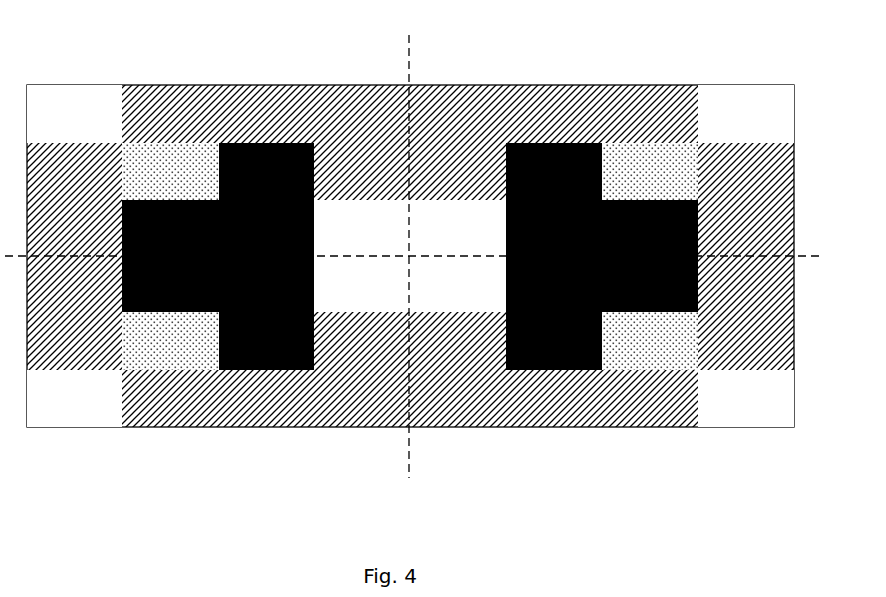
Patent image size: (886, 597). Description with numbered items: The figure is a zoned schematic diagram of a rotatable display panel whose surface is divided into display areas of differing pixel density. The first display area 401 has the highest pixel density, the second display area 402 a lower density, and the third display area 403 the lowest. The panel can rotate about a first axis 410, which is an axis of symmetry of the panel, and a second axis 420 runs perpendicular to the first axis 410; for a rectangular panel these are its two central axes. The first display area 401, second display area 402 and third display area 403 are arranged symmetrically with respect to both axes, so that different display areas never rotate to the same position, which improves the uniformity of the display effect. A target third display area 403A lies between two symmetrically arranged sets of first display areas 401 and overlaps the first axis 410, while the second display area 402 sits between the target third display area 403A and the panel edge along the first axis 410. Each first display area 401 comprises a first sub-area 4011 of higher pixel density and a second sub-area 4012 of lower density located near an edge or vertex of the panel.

The first display area 401 is at (410, 343).
The first sub-area 4011 is at (252, 370).
The second sub-area 4012 is at (153, 367).
The second display area 402 is at (175, 103).
The third display area 403 is at (68, 102).
The target third display area 403A is at (445, 212).
The first axis 410 is at (393, 251).
The second axis 420 is at (438, 271).